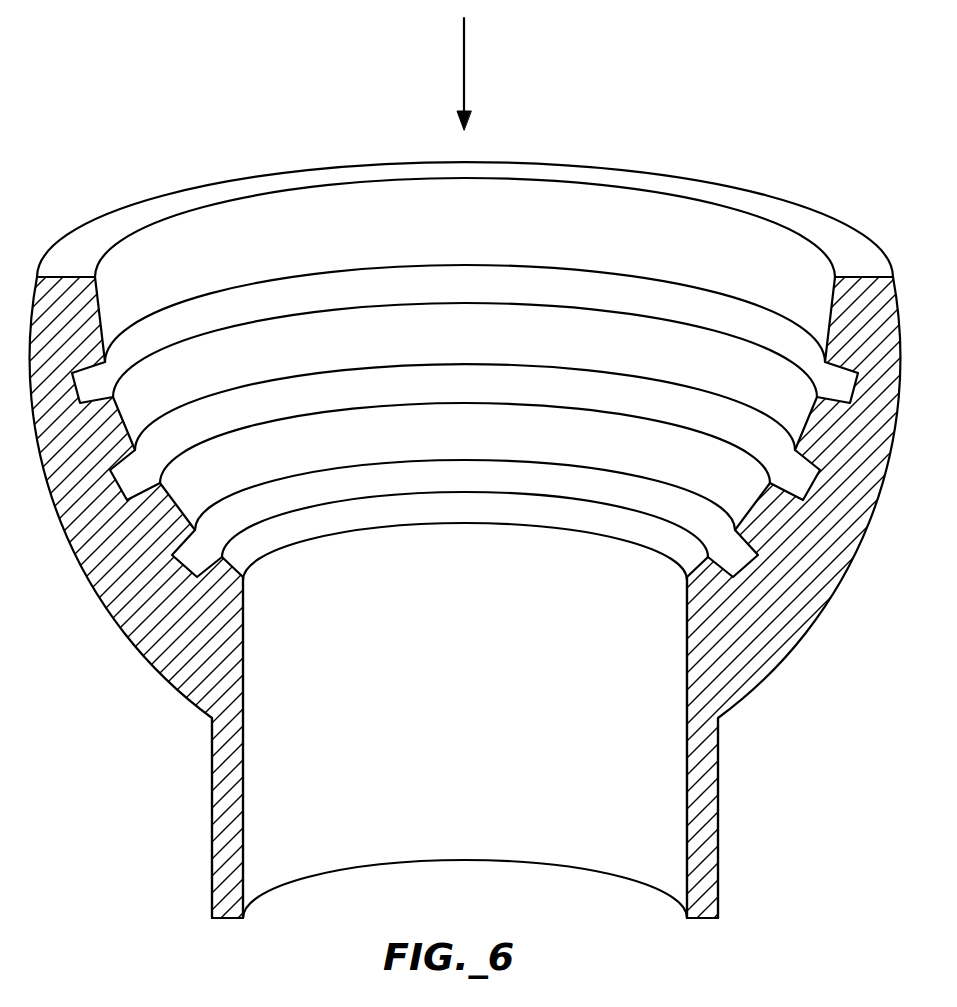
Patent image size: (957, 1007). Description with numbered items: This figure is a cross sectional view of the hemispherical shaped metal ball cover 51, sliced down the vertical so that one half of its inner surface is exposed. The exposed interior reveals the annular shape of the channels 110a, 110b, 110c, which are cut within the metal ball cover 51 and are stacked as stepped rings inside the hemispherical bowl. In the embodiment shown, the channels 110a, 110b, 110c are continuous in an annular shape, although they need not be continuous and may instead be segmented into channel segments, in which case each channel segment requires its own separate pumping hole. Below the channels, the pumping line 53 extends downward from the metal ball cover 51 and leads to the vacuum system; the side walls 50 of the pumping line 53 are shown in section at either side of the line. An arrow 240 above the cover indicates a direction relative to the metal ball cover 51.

The side walls 50 is at (220, 908).
The metal ball cover 51 is at (128, 610).
The pumping line 53 is at (467, 828).
The channel 110a is at (690, 307).
The channel 110b is at (548, 382).
The channel 110c is at (458, 478).
The insertion direction arrow 240 is at (464, 60).